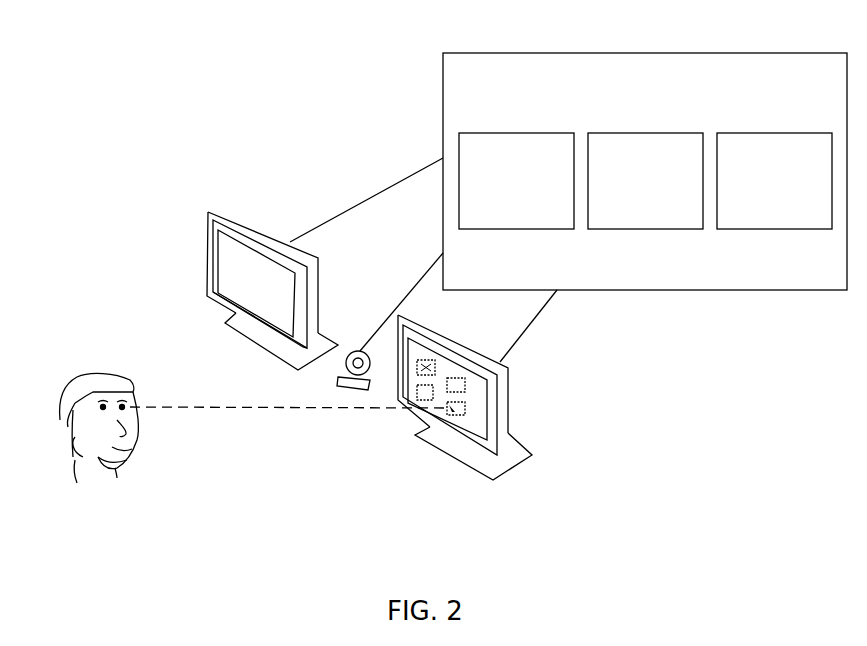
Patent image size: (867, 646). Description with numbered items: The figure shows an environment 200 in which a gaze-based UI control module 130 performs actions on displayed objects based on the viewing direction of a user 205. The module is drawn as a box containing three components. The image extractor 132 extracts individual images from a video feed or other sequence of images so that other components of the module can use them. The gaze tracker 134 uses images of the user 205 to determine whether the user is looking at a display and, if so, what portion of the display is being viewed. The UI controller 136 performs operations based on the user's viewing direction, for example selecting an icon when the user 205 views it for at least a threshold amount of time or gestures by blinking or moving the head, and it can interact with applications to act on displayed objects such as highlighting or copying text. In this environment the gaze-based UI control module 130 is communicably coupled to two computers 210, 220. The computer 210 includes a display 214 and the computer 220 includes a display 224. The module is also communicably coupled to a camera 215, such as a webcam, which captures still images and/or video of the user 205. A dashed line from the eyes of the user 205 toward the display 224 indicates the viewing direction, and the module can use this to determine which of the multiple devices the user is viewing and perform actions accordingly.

The environment 200 is at (105, 66).
The gaze-based UI control module 130 is at (631, 108).
The image extractor 132 is at (502, 215).
The gaze tracker 134 is at (631, 215).
The UI controller 136 is at (760, 215).
The computer 210 is at (177, 207).
The display 214 is at (227, 279).
The camera 215 is at (353, 341).
The computer 220 is at (535, 492).
The display 224 is at (478, 417).
The user 205 is at (102, 500).